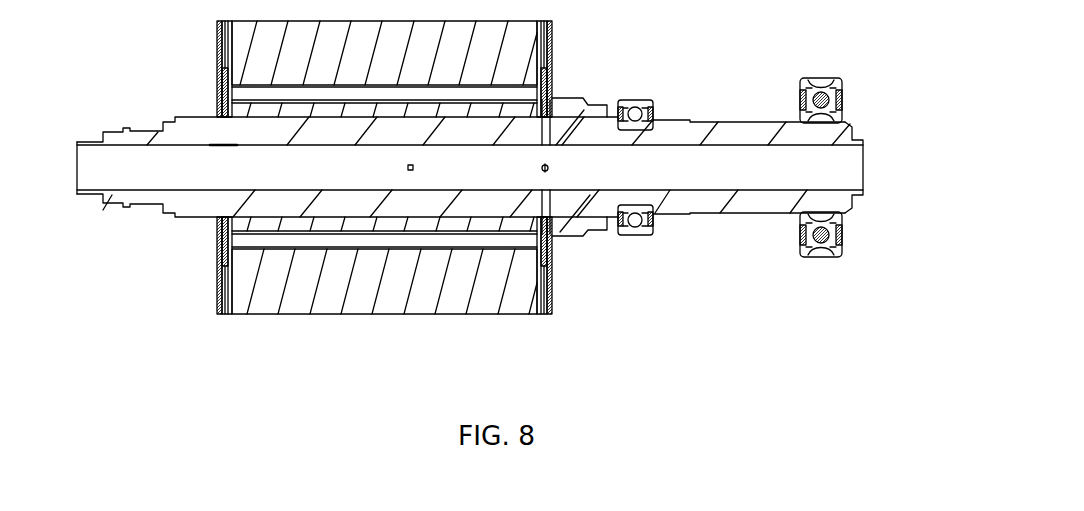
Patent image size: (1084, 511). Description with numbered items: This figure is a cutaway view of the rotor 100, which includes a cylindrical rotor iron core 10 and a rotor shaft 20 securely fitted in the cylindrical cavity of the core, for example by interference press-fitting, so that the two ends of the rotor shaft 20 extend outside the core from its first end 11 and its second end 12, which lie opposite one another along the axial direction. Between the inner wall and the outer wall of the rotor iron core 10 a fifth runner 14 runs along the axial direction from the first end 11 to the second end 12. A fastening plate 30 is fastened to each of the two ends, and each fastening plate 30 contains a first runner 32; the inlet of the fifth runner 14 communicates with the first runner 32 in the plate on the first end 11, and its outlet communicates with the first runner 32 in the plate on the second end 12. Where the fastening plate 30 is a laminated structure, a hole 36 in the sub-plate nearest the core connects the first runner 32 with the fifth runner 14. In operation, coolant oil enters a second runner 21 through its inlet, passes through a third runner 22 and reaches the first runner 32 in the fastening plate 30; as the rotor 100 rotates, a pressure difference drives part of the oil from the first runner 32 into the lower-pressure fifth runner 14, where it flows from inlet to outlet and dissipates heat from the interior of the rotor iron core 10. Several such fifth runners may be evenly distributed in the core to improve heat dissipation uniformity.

The rotor 100 is at (112, 72).
The rotor iron core 10 is at (363, 317).
The first end 11 is at (537, 28).
The second end 12 is at (230, 33).
The fifth runner 14 is at (358, 97).
The rotor shaft 20 is at (707, 215).
The second runner 21 is at (852, 172).
The third runner 22 is at (547, 142).
The fastening plate 30 is at (218, 62).
The first runner 32 is at (218, 92).
The hole 36 is at (237, 145).